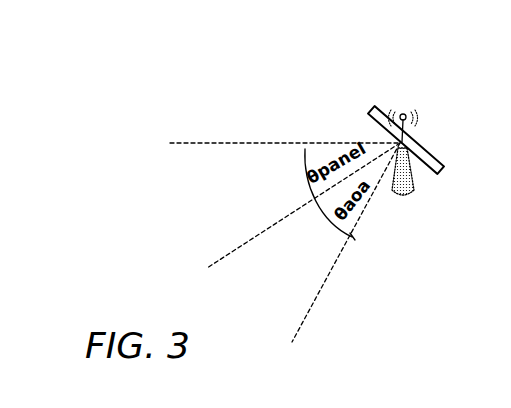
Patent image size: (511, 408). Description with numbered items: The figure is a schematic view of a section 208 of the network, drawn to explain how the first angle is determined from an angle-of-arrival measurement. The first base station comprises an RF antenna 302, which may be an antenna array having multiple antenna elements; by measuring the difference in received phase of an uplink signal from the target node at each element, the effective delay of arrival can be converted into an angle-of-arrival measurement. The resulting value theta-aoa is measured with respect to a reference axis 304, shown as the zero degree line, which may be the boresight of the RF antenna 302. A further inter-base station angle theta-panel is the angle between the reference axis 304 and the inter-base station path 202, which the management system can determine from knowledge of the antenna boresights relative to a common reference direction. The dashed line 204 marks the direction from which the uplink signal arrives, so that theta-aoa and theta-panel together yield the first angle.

The section 208 is at (163, 83).
The inter-base station path 202 is at (233, 142).
The angle of arrival line 204 is at (337, 265).
The RF antenna 302 is at (437, 167).
The reference axis 304 is at (228, 252).